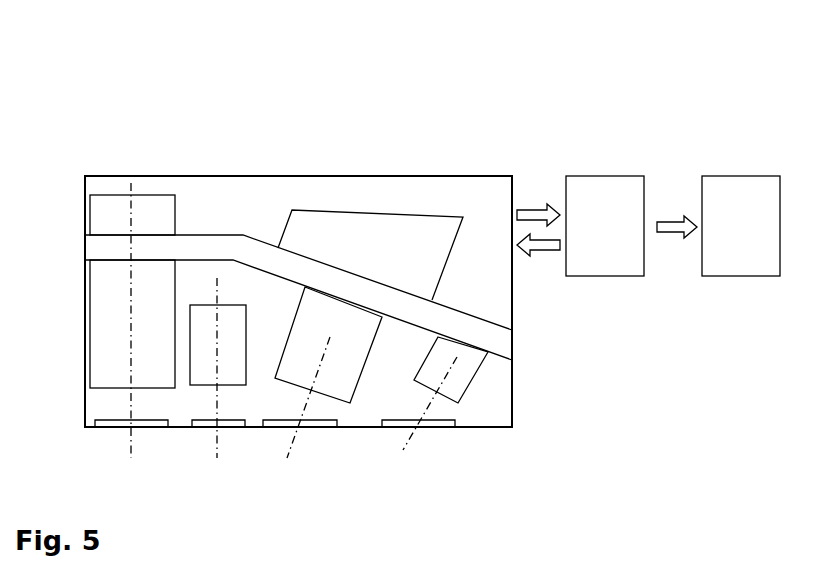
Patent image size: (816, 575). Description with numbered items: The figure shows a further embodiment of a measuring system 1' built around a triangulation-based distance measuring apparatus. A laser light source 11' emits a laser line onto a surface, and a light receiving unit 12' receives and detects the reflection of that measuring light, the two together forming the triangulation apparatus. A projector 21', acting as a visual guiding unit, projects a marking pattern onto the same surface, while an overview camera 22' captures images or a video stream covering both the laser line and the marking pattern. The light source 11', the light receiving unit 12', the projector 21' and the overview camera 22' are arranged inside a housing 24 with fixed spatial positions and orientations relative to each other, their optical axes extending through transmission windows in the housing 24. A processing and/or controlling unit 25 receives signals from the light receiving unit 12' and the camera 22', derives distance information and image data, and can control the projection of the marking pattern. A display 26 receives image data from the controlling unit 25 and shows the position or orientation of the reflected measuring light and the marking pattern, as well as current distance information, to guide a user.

The measuring system 1' is at (356, 220).
The laser light source 11' is at (103, 189).
The light receiving unit 12' is at (400, 215).
The projector 21' is at (505, 381).
The overview camera 22' is at (181, 250).
The housing 24 is at (335, 176).
The processing and/or controlling unit 25 is at (605, 226).
The display 26 is at (741, 226).